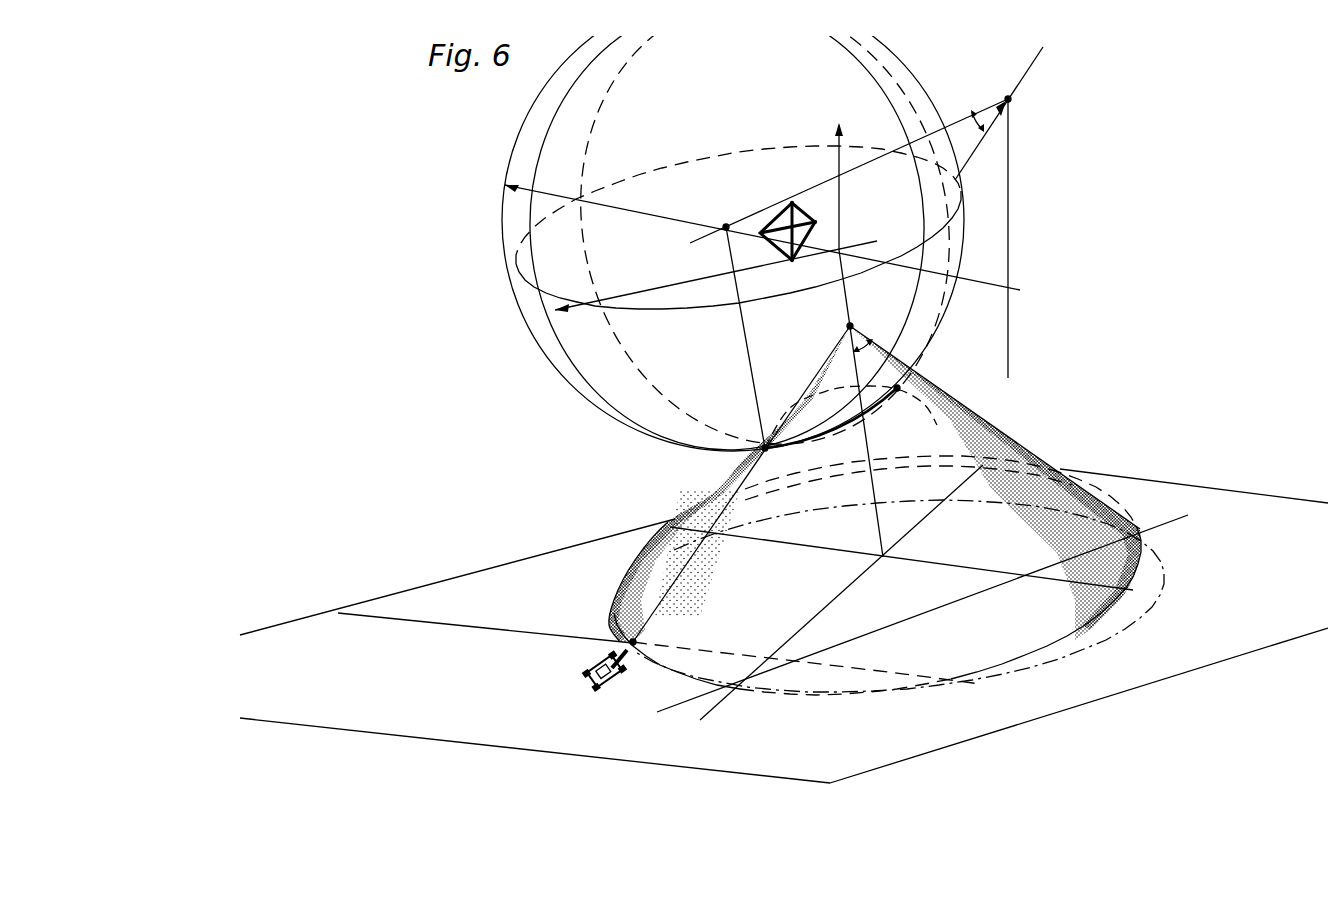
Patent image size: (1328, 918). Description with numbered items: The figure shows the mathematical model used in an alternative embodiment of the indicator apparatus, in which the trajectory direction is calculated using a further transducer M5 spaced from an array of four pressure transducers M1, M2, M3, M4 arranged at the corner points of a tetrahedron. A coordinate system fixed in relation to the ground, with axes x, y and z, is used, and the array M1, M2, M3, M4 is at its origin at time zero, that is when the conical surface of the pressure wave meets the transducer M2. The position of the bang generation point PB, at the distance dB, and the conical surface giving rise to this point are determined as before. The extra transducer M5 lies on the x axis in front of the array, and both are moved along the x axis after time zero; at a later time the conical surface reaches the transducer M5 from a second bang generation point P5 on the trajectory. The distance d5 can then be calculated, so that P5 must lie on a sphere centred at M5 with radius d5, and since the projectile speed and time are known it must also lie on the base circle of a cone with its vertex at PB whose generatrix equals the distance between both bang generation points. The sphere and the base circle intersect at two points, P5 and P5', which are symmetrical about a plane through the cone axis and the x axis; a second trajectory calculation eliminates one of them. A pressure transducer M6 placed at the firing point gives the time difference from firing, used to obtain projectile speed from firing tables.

The pressure transducer M1 is at (760, 233).
The pressure transducer M2 is at (792, 260).
The pressure transducer M3 is at (815, 222).
The pressure transducer M4 is at (792, 203).
The further transducer M5 is at (736, 202).
The pressure transducer M6 is at (633, 642).
The second bang generation point P5 is at (778, 462).
The second intersection point P5' is at (885, 410).
The bang generation point PB is at (850, 326).
The distance d5 is at (742, 352).
The distance dB is at (847, 303).
The x axis x is at (762, 226).
The y axis y is at (716, 285).
The z axis z is at (845, 186).